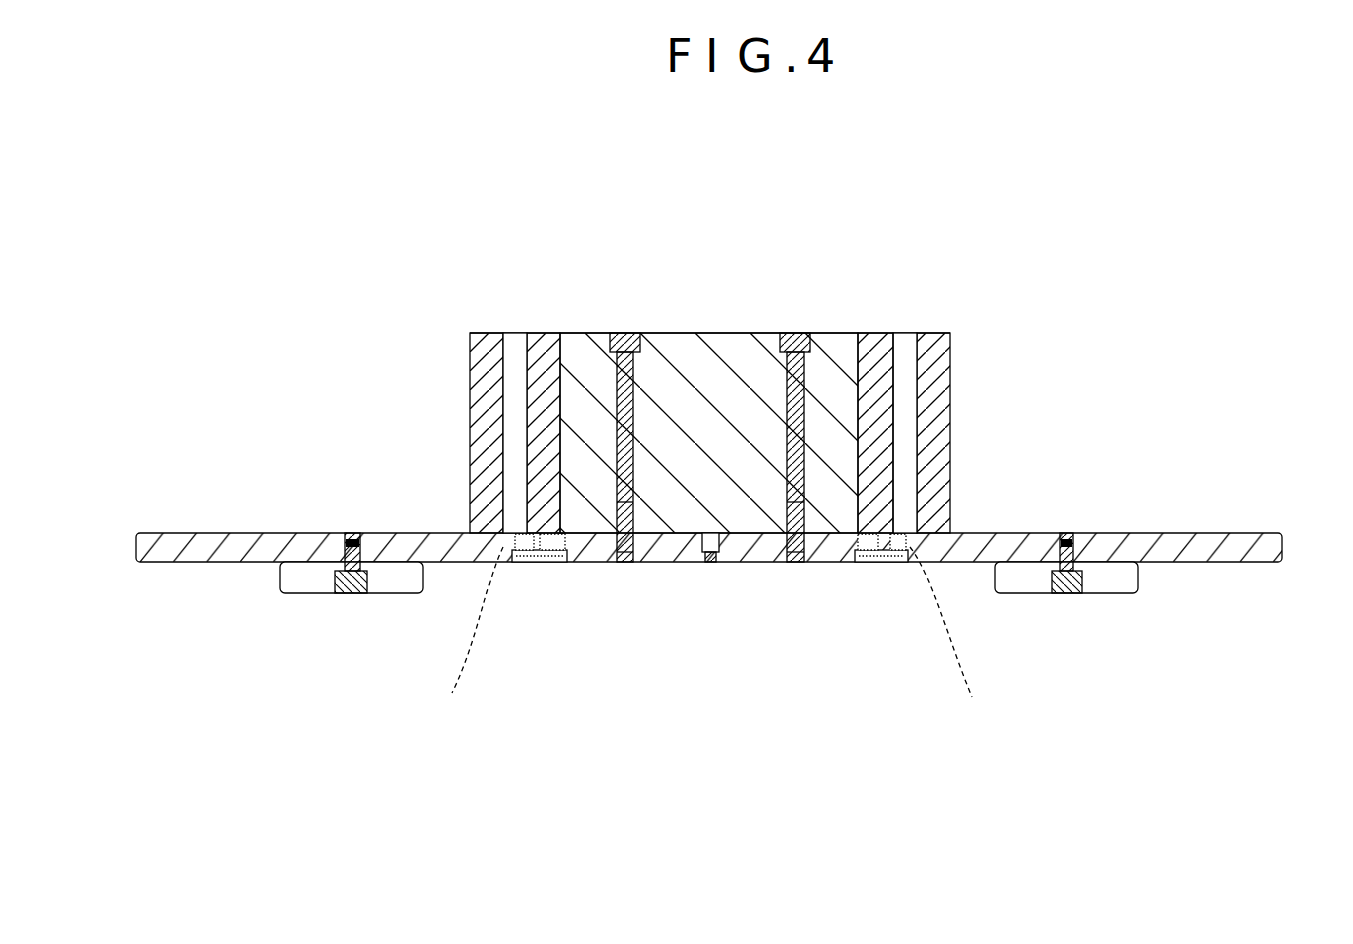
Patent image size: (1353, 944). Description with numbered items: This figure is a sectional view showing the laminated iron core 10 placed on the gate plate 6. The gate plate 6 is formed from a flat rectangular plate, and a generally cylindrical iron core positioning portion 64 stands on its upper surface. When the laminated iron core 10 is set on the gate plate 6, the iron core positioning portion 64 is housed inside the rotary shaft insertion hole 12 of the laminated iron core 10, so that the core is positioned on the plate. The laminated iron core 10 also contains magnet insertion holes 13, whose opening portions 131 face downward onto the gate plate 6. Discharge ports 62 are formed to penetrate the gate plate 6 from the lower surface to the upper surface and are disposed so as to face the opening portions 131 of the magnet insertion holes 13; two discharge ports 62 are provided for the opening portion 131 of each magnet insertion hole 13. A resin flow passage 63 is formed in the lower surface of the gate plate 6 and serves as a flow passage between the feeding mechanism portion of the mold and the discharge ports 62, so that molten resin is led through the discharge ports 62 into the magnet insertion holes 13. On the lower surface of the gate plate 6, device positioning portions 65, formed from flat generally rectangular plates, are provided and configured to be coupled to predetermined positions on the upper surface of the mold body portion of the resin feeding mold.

The gate plate 6 is at (283, 514).
The laminated iron core 10 is at (488, 334).
The rotary shaft insertion hole 12 is at (857, 398).
The magnet insertion hole 13 is at (513, 333).
The opening portion 131 is at (515, 532).
The discharge port 62 is at (712, 640).
The resin flow passage 63 is at (542, 563).
The iron core positioning portion 64 is at (688, 333).
The device positioning portion 65 is at (314, 580).